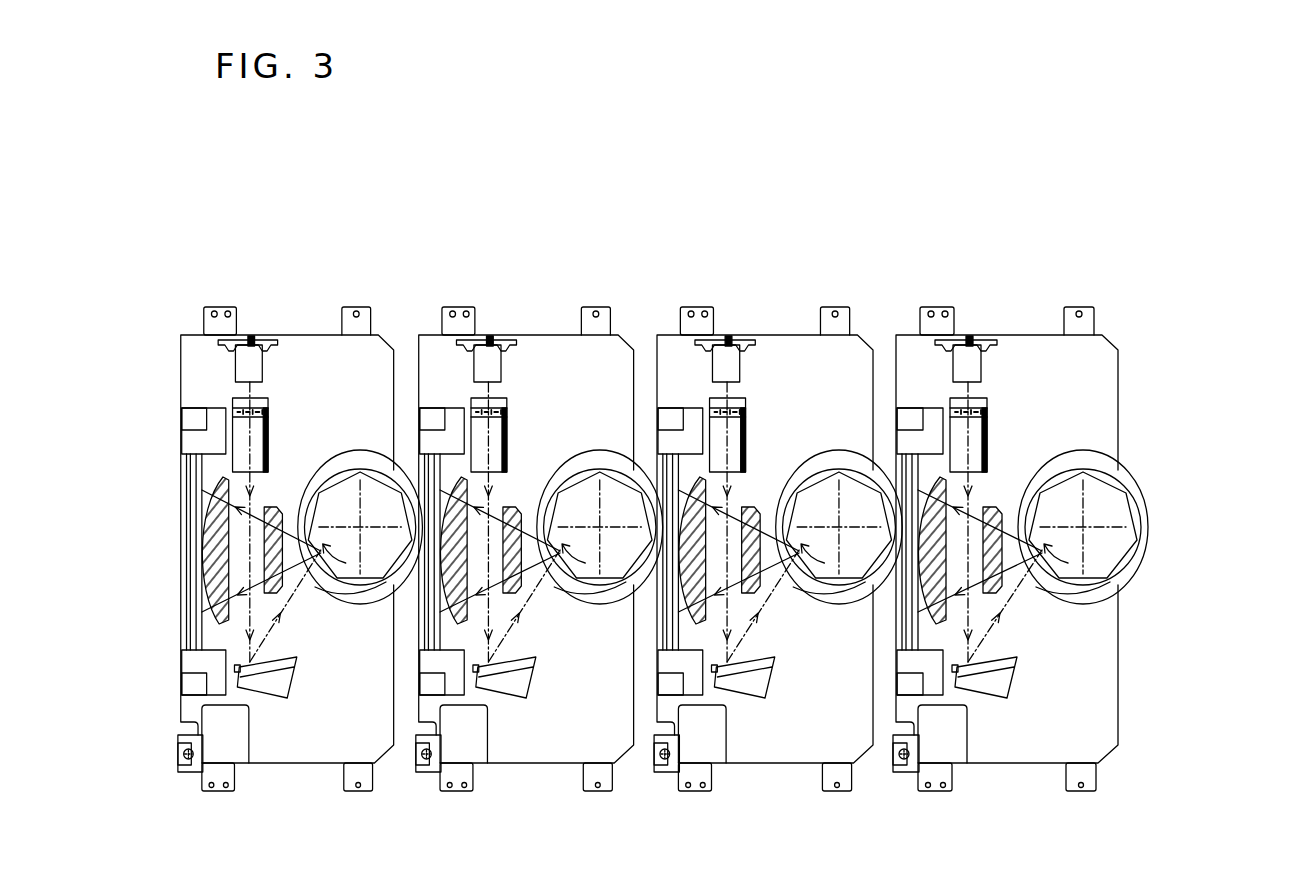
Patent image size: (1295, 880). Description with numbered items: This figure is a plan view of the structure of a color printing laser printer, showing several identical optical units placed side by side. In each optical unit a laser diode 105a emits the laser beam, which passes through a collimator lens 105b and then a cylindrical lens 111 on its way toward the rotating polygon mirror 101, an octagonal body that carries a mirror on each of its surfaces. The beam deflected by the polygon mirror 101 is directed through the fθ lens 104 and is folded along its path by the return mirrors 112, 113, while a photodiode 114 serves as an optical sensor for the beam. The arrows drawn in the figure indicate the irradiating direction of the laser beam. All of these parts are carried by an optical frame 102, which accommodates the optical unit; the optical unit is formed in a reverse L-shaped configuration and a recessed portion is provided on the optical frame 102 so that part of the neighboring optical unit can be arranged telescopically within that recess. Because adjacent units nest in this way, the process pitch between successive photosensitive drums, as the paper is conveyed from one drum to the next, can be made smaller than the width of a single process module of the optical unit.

The polygon mirror 101 is at (1097, 512).
The optical frame 102 is at (1090, 353).
The fθ lens 104 is at (1002, 567).
The laser diode 105a is at (975, 333).
The collimator lens 105b is at (985, 352).
The cylindrical lens 111 is at (988, 408).
The return mirror 112 is at (946, 584).
The return mirror 113 is at (1012, 686).
The photodiode 114 is at (916, 748).